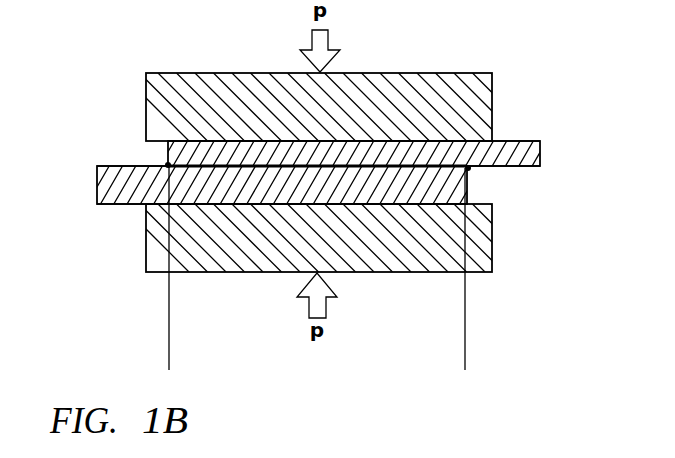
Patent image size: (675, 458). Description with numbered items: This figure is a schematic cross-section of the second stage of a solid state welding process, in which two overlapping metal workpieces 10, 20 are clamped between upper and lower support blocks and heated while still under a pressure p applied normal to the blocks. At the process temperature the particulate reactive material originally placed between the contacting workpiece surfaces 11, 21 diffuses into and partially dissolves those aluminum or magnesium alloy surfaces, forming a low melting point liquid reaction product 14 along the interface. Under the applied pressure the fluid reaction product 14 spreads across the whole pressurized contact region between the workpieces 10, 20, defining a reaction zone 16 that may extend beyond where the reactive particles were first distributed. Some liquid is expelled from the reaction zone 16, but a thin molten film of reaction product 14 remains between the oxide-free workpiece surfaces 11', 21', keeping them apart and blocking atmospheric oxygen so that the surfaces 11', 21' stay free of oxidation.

The metal workpiece 10 is at (355, 152).
The metal workpiece 20 is at (242, 188).
The workpiece surface 11 is at (531, 183).
The workpiece surface 21 is at (96, 151).
The oxide-free workpiece surface 11' is at (354, 88).
The oxide-free workpiece surface 21' is at (282, 265).
The reaction product 14 is at (166, 164).
The reaction zone 16 is at (169, 359).